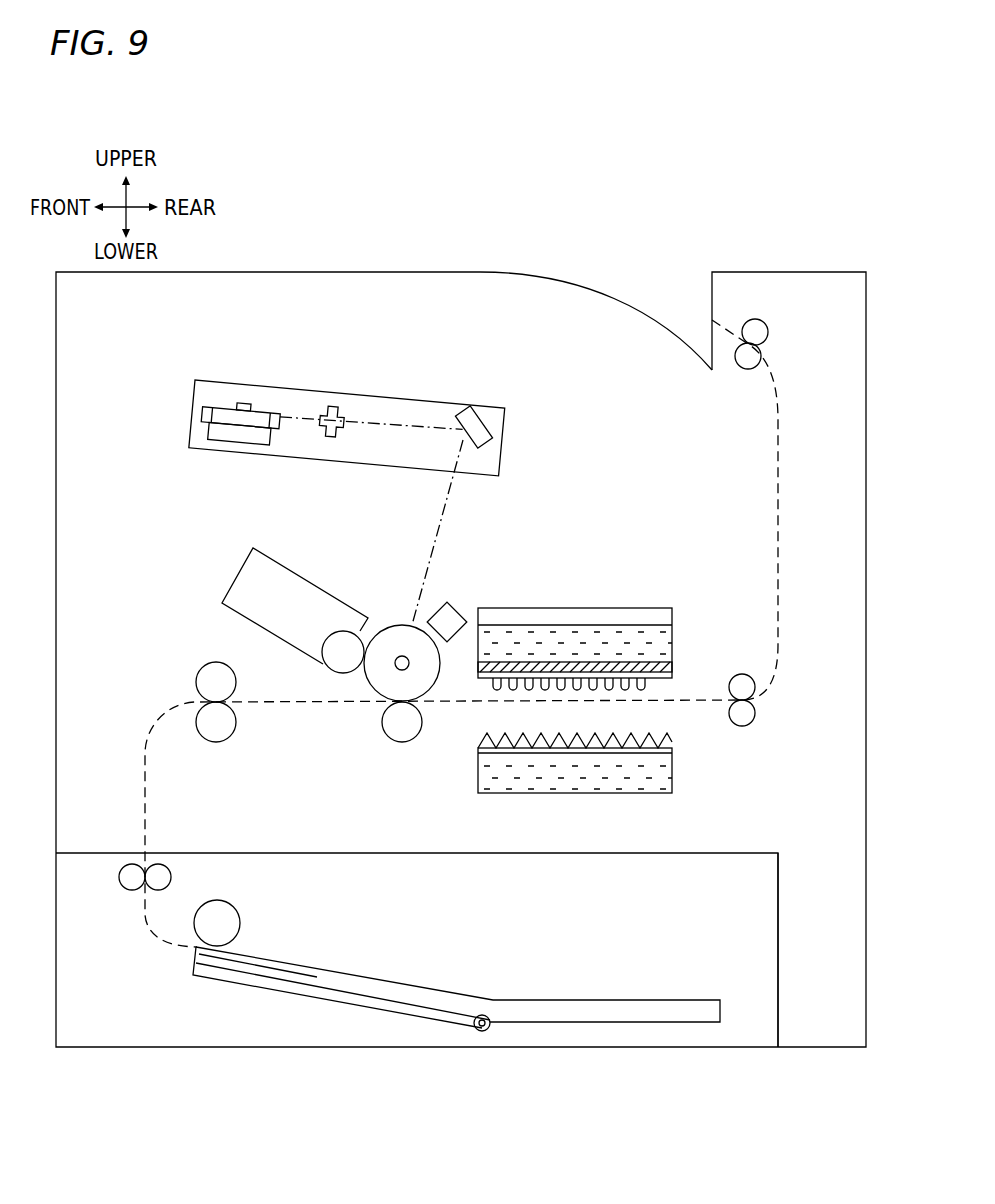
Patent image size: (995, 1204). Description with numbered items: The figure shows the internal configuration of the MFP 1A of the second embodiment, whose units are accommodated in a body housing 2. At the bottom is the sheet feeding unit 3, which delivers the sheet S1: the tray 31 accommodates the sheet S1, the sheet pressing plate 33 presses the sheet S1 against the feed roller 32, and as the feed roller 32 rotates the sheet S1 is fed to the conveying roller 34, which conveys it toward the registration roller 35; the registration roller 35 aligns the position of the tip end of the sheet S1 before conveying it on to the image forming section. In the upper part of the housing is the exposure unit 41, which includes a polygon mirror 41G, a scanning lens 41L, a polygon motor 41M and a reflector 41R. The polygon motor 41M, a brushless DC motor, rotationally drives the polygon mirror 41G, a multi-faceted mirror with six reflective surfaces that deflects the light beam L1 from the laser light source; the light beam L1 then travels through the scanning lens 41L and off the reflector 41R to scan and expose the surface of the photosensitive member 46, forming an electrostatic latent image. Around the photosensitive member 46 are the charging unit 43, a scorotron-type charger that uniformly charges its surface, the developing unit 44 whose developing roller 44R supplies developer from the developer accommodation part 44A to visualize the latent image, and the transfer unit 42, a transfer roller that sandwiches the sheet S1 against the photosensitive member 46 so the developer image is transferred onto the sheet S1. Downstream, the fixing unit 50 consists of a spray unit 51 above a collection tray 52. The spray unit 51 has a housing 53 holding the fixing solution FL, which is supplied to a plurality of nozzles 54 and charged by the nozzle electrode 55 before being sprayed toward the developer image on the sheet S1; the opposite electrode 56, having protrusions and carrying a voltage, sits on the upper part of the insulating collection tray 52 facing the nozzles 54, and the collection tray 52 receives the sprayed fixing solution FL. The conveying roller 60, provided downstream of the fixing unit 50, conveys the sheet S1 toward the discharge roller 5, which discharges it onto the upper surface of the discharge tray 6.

The MFP 1A is at (461, 594).
The body housing 2 is at (316, 272).
The sheet feeding unit 3 is at (750, 848).
The discharge roller 5 is at (768, 332).
The discharge tray 6 is at (601, 296).
The tray 31 is at (778, 950).
The feed roller 32 is at (228, 902).
The sheet pressing plate 33 is at (316, 1002).
The conveying roller 34 is at (119, 877).
The registration roller 35 is at (216, 742).
The exposure unit 41 is at (351, 426).
The polygon mirror 41G is at (257, 377).
The scanning lens 41L is at (339, 386).
The polygon motor 41M is at (237, 458).
The reflector 41R is at (493, 420).
The transfer unit 42 is at (402, 742).
The charging unit 43 is at (454, 614).
The developing unit 44 is at (279, 597).
The developer accommodation part 44A is at (316, 583).
The developing roller 44R is at (326, 638).
The photosensitive member 46 is at (402, 625).
The fixing unit 50 is at (599, 685).
The spray unit 51 is at (598, 627).
The collection tray 52 is at (599, 784).
The housing 53 is at (672, 613).
The nozzles 54 is at (650, 684).
The nozzle electrode 55 is at (672, 665).
The opposite electrode 56 is at (672, 735).
The conveying roller 60 is at (742, 672).
The fixing solution FL is at (660, 641).
The light beam L1 is at (455, 519).
The sheet S1 is at (604, 999).